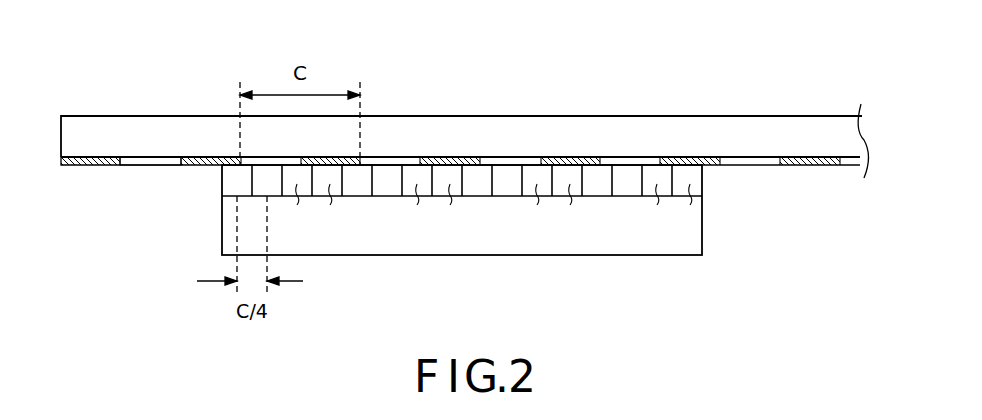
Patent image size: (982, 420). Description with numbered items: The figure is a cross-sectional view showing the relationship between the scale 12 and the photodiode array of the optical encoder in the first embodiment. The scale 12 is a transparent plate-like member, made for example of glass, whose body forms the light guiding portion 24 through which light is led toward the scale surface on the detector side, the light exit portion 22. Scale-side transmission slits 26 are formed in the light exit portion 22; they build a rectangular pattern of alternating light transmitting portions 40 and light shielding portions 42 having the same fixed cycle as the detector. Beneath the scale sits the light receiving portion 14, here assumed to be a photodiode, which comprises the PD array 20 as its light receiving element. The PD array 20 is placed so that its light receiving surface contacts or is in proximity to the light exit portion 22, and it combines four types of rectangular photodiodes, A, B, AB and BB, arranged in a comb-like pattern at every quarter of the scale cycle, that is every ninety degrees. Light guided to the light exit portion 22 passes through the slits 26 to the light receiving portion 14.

The scale 12 is at (701, 116).
The light receiving portion 14 is at (552, 256).
The PD array 20 is at (704, 187).
The light exit portion 22 is at (57, 164).
The light guiding portion 24 is at (522, 137).
The scale-side transmission slits 26 is at (95, 166).
The light transmitting portions 40 is at (150, 166).
The light shielding portions 42 is at (107, 157).